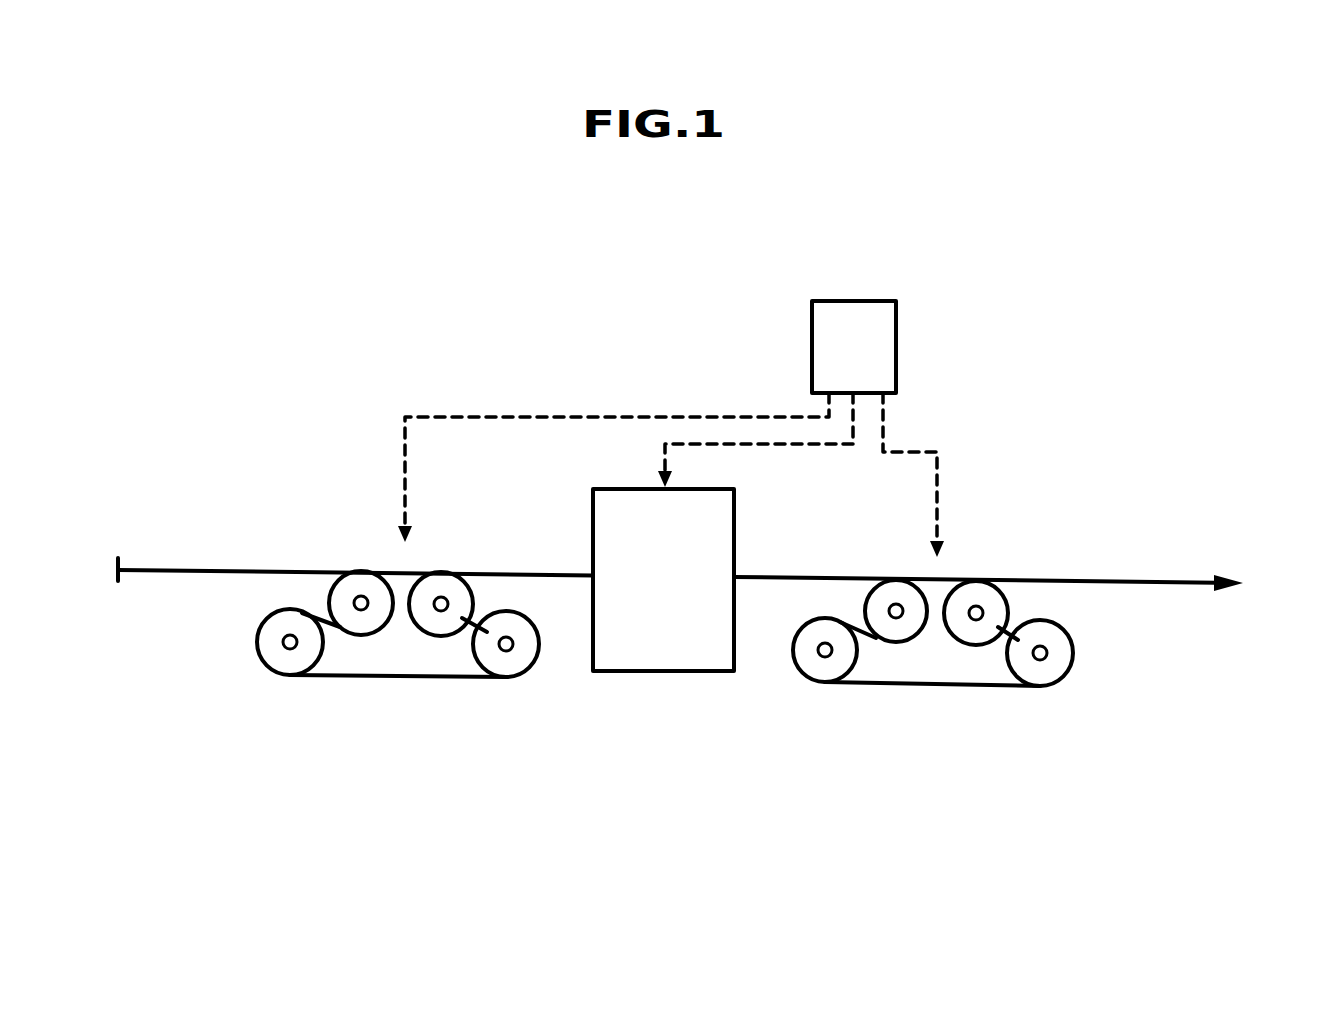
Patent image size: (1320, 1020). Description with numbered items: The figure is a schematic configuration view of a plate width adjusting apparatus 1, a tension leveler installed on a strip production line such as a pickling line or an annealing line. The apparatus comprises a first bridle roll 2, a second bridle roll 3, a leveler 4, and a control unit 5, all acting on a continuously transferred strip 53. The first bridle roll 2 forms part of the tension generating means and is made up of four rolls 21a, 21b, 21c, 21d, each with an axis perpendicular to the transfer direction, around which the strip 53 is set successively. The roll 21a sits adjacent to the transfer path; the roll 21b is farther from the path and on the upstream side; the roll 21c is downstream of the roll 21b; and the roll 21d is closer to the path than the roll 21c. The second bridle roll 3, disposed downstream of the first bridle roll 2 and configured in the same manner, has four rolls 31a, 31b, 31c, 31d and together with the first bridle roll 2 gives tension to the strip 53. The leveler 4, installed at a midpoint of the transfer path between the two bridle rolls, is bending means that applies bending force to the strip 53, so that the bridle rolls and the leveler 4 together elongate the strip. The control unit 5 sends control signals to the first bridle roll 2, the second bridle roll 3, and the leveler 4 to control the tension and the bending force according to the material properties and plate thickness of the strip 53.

The plate width adjusting apparatus 1 is at (428, 364).
The first bridle roll 2 is at (400, 674).
The second bridle roll 3 is at (943, 685).
The leveler 4 is at (672, 648).
The control unit 5 is at (896, 330).
The strip 53 is at (237, 570).
The roll 21a is at (363, 572).
The roll 21b is at (288, 670).
The roll 21c is at (507, 668).
The roll 21d is at (440, 576).
The roll 31a is at (902, 582).
The roll 31b is at (820, 675).
The roll 31c is at (1057, 672).
The roll 31d is at (982, 588).